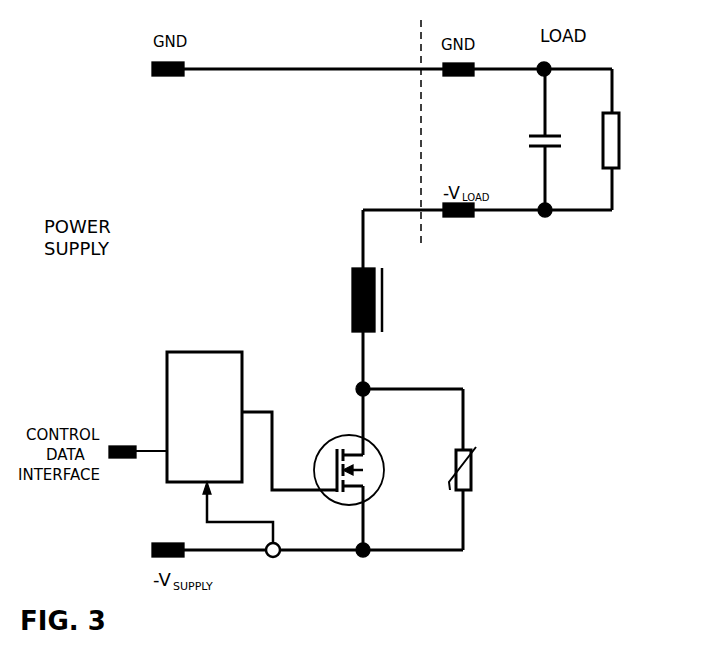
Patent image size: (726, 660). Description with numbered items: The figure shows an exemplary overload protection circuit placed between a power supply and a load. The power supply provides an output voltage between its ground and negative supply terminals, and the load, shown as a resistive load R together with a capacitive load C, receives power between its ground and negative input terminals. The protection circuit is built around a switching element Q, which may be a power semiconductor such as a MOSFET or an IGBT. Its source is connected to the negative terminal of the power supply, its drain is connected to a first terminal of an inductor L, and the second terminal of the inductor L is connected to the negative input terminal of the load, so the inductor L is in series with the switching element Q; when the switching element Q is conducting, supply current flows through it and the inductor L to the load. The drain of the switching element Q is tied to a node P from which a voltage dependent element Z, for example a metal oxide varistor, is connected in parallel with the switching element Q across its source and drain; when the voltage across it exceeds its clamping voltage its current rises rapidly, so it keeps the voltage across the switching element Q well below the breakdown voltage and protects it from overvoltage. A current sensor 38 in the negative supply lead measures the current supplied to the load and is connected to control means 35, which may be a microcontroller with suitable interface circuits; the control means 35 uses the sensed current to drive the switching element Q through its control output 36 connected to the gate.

The control means 35 is at (167, 405).
The control output 36 is at (254, 408).
The current sensor 38 is at (281, 556).
The capacitive load C is at (527, 145).
The resistive load R is at (623, 148).
The inductor L is at (396, 308).
The node P is at (378, 384).
The switching element Q is at (385, 475).
The voltage dependent element Z is at (480, 475).